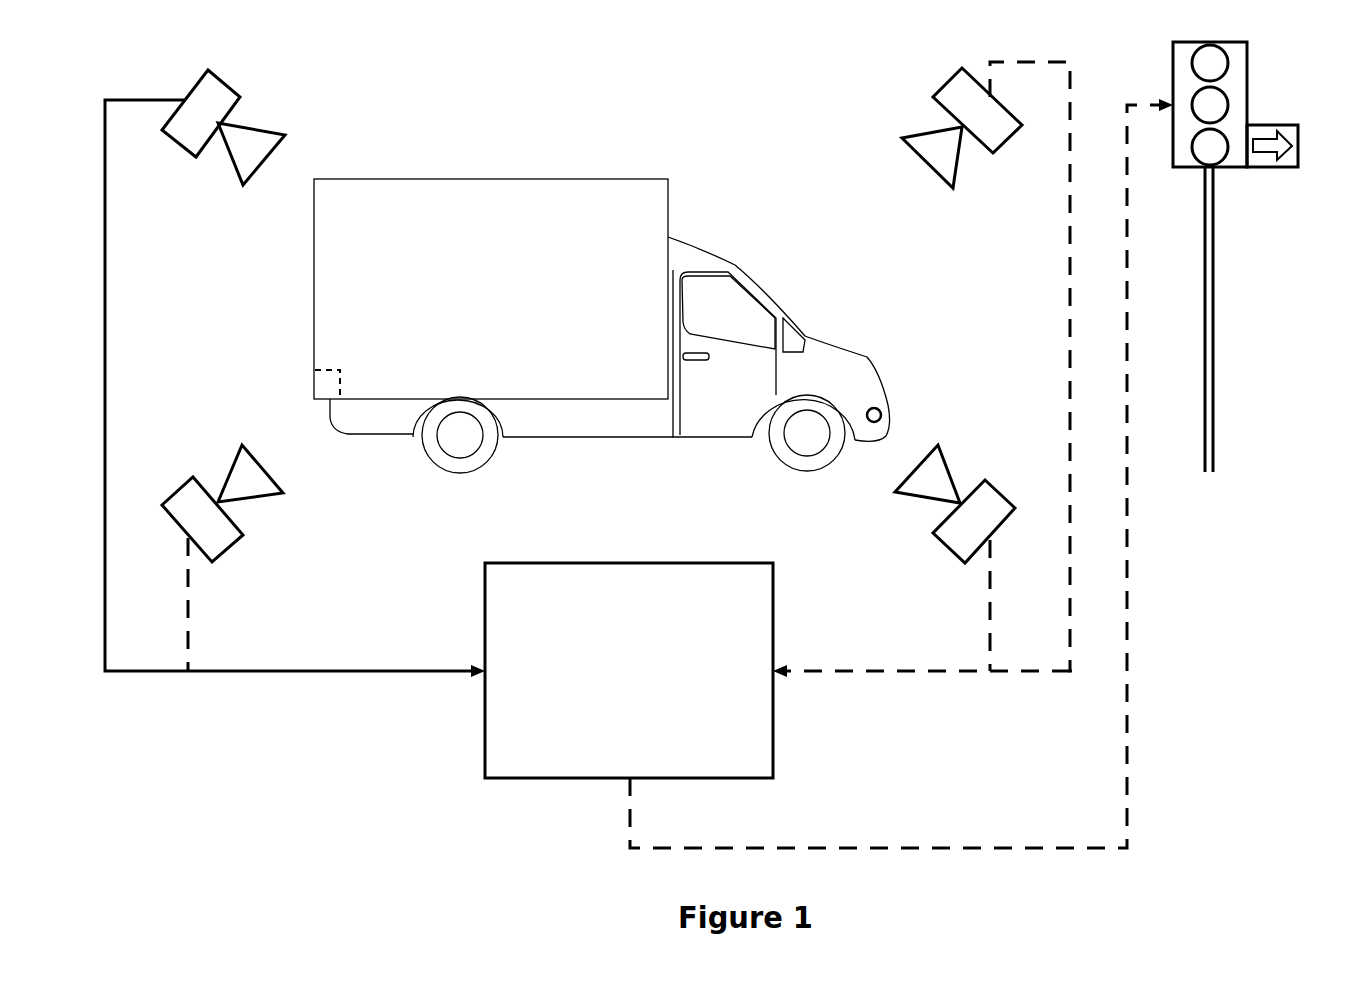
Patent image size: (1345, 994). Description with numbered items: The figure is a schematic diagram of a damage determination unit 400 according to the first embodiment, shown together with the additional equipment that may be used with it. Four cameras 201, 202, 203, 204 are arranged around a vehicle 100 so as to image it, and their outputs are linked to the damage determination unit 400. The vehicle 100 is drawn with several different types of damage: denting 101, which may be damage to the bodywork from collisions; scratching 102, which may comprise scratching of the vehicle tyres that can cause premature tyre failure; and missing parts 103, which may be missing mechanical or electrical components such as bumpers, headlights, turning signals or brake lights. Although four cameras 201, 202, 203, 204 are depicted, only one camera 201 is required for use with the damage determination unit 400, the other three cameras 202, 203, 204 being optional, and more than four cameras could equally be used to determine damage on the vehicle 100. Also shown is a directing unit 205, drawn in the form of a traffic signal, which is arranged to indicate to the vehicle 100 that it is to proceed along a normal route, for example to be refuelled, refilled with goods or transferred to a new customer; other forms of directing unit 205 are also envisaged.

The vehicle 100 is at (550, 179).
The denting 101 is at (880, 410).
The scratching 102 is at (501, 421).
The missing parts 103 is at (333, 370).
The camera 201 is at (240, 100).
The camera 202 is at (227, 547).
The camera 203 is at (987, 478).
The camera 204 is at (965, 70).
The directing unit 205 is at (1247, 88).
The damage determination unit 400 is at (700, 563).